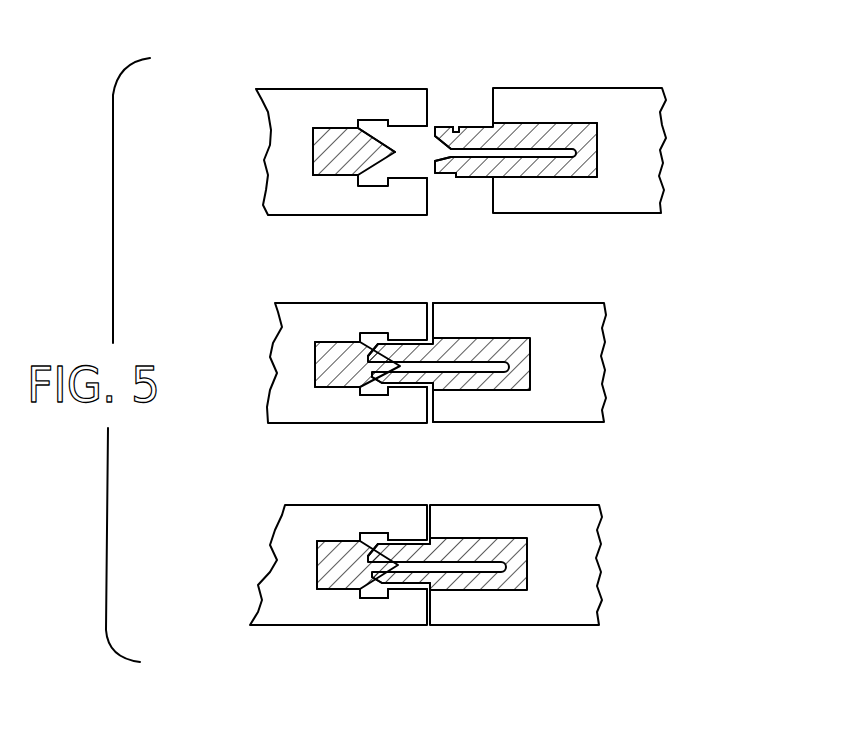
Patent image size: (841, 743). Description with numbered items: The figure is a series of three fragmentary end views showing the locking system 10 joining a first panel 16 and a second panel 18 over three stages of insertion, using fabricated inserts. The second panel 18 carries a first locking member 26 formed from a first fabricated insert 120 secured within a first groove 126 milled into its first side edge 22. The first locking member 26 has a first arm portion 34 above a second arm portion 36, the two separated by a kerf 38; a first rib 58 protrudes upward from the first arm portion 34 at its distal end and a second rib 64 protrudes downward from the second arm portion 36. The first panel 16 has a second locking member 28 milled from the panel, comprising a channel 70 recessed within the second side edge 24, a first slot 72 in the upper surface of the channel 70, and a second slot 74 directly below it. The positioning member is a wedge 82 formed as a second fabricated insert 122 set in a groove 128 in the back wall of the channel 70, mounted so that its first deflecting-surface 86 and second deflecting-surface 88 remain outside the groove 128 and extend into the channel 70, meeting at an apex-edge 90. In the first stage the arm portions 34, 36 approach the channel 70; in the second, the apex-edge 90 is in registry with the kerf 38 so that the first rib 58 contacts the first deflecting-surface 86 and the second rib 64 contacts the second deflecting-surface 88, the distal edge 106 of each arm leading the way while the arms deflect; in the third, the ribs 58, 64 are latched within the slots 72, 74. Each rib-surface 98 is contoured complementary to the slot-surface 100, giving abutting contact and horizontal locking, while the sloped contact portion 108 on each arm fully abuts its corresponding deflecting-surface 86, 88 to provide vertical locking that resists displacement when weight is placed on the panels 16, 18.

The locking system 10 is at (714, 137).
The first panel 16 is at (318, 326).
The second panel 18 is at (573, 327).
The first side edge 22 is at (435, 323).
The second side edge 24 is at (432, 403).
The first locking member 26 is at (510, 133).
The second locking member 28 is at (388, 138).
The first arm portion 34 is at (447, 128).
The second arm portion 36 is at (475, 174).
The kerf 38 is at (493, 340).
The first rib 58 is at (471, 128).
The second rib 64 is at (447, 176).
The channel 70 is at (410, 158).
The first slot 72 is at (368, 538).
The second slot 74 is at (373, 597).
The wedge 82 is at (377, 143).
The first deflecting-surface 86 is at (362, 353).
The second deflecting-surface 88 is at (364, 390).
The apex-edge 90 is at (398, 388).
The rib-surface 98 is at (385, 543).
The slot-surface 100 is at (382, 595).
The distal edge 106 is at (380, 374).
The contact portion 108 is at (392, 577).
The first fabricated insert 120 is at (552, 135).
The second fabricated insert 122 is at (338, 150).
The first groove 126 is at (565, 178).
The groove 128 is at (341, 172).